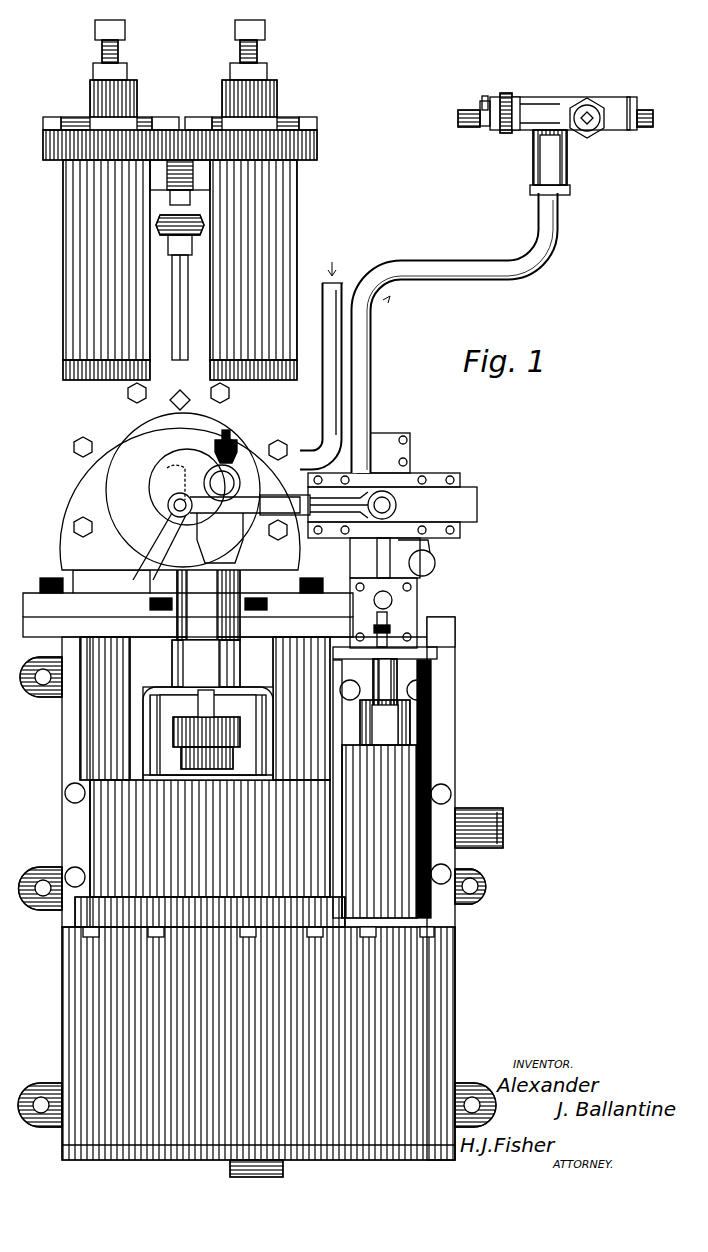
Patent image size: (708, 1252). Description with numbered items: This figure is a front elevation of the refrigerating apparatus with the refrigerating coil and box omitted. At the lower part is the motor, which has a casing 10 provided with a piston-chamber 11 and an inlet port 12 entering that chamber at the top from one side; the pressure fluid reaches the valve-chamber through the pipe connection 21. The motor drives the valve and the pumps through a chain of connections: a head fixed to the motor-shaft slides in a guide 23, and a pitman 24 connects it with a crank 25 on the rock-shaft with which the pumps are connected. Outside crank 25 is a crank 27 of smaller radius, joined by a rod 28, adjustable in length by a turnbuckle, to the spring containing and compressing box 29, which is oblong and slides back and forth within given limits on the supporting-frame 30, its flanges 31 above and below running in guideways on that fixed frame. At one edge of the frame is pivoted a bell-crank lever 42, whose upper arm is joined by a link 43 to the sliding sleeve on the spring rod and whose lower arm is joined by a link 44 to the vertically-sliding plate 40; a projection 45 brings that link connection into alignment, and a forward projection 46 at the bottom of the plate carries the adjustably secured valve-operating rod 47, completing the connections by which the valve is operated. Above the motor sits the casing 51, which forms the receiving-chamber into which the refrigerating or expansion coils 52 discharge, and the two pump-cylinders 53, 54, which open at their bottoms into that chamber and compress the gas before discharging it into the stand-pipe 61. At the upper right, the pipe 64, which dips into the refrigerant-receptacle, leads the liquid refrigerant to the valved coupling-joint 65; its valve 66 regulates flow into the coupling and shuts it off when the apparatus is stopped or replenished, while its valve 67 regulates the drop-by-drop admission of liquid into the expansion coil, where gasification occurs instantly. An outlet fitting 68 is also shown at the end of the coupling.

The casing 10 is at (40, 637).
The piston-chamber 11 is at (210, 782).
The inlet port 12 is at (215, 712).
The pipe connection 21 is at (486, 812).
The guide 23 is at (240, 630).
The pitman 24 is at (226, 553).
The crank 25 is at (220, 470).
The crank 27 is at (168, 510).
The rod 28 is at (250, 490).
The spring containing and compressing box 29 is at (477, 506).
The supporting-frame 30 is at (352, 548).
The flanges 31 is at (462, 484).
The vertically-sliding plate 40 is at (365, 565).
The bell-crank lever 42 is at (436, 548).
The link 43 is at (383, 558).
The link 44 is at (390, 600).
The projection 45 is at (378, 612).
The forward projection 46 is at (390, 633).
The valve-operating rod 47 is at (392, 676).
The casing 51 is at (62, 437).
The refrigerating or expansion coils 52 is at (343, 283).
The pump-cylinder 53 is at (63, 239).
The pump-cylinder 54 is at (290, 235).
The stand-pipe 61 is at (180, 260).
The pipe 64 is at (457, 333).
The valved coupling-joint 65 is at (572, 136).
The valve 66 is at (470, 127).
The valve 67 is at (592, 100).
The outlet fitting 68 is at (645, 127).